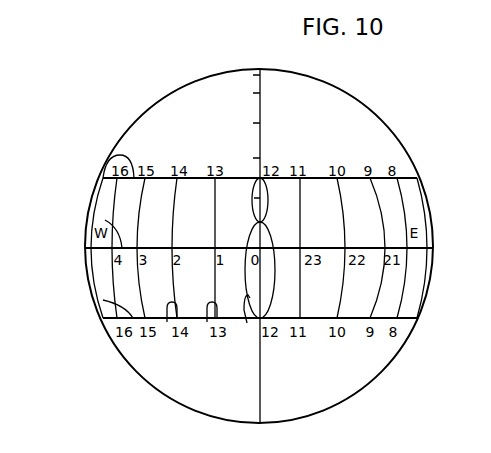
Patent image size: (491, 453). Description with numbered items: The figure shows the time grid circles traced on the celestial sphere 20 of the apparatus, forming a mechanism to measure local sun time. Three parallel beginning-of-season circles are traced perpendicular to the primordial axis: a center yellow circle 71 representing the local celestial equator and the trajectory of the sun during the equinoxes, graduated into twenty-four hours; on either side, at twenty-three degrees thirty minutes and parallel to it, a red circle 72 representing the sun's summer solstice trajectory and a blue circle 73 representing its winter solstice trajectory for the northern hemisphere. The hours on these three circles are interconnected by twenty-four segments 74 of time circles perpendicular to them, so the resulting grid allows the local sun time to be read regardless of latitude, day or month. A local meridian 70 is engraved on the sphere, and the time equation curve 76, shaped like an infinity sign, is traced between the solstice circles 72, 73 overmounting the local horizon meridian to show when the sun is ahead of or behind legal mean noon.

The sphere 20 is at (139, 117).
The local meridian 70 is at (260, 108).
The yellow circle 71 is at (105, 220).
The red circle 72 is at (115, 155).
The blue circle 73 is at (103, 300).
The segments of time circles 74 is at (207, 322).
The equation curve 76 is at (247, 323).